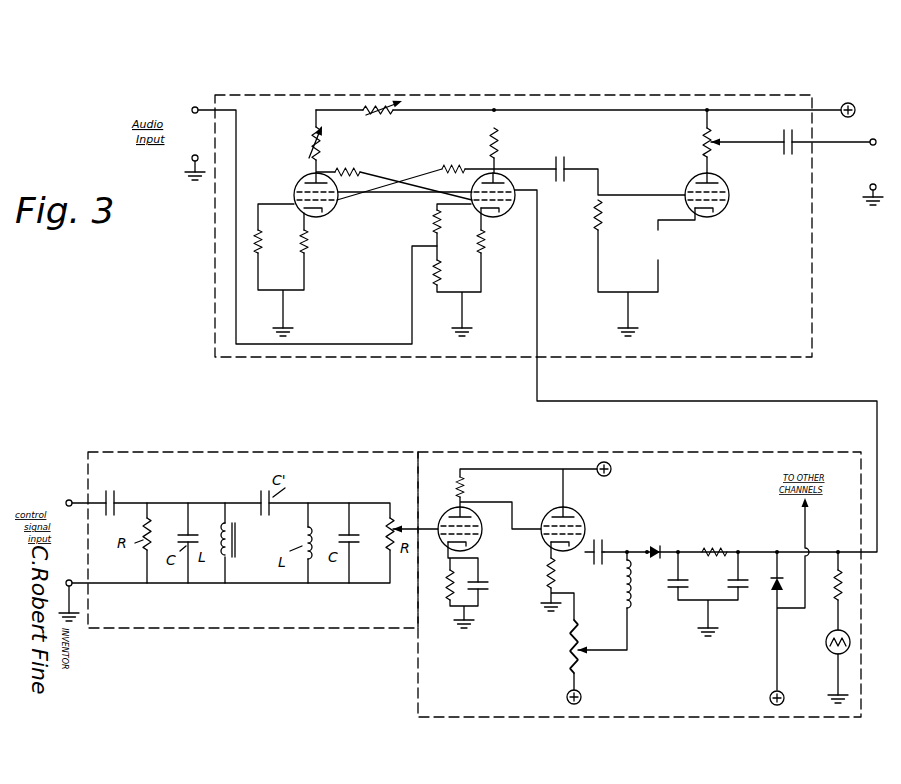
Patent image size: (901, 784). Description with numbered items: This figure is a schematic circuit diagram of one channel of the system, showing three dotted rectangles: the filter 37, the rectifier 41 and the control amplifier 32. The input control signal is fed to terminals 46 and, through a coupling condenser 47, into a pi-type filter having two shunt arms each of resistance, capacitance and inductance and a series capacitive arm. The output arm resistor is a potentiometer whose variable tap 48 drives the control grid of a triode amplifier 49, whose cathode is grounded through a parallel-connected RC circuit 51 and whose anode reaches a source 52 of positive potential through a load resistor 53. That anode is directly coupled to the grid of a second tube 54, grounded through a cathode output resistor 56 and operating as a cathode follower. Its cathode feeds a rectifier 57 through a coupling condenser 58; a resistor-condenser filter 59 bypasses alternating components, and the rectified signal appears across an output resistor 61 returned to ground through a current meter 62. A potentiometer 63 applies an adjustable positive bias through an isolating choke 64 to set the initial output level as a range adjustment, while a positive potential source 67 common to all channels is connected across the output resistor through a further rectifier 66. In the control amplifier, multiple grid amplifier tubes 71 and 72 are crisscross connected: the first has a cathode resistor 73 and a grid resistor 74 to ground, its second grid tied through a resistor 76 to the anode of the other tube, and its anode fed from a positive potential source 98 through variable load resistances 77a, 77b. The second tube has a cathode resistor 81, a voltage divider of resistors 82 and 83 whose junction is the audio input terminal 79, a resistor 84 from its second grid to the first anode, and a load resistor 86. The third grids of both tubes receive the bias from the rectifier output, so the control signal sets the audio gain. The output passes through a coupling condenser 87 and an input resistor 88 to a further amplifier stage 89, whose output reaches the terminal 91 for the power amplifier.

The control amplifier 32 is at (812, 316).
The filter 37 is at (131, 630).
The rectifier 41 is at (418, 690).
The input terminals 46 is at (68, 500).
The coupling condenser 47 is at (115, 492).
The variable tap 48 is at (398, 523).
The triode amplifier 49 is at (478, 542).
The parallel-connected RC circuit 51 is at (450, 606).
The source of positive potential 52 is at (612, 469).
The load resistor 53 is at (470, 486).
The second tube 54 is at (578, 512).
The cathode output resistor 56 is at (547, 583).
The rectifier 57 is at (660, 545).
The coupling condenser 58 is at (605, 540).
The resistor-condenser filter 59 is at (708, 583).
The output resistor 61 is at (845, 589).
The current meter 62 is at (850, 646).
The potentiometer 63 is at (568, 649).
The isolating choke 64 is at (632, 577).
The further rectifier 66 is at (772, 592).
The positive potential source 67 is at (770, 698).
The amplifier tube 71 is at (327, 214).
The amplifier tube 72 is at (508, 213).
The cathode resistor 73 is at (311, 250).
The resistor 74 is at (252, 240).
The resistor 76 is at (453, 158).
The variable load resistance 77a is at (309, 140).
The variable load resistance 77b is at (377, 116).
The input terminal 79 is at (192, 109).
The cathode resistor 81 is at (490, 248).
The resistor 82 is at (432, 218).
The resistor 83 is at (432, 270).
The resistor 84 is at (343, 165).
The load resistor 86 is at (499, 140).
The coupling condenser 87 is at (571, 150).
The input resistor 88 is at (602, 212).
The further amplifier stage 89 is at (724, 204).
The terminal 91 is at (870, 148).
The positive potential source 98 is at (855, 102).